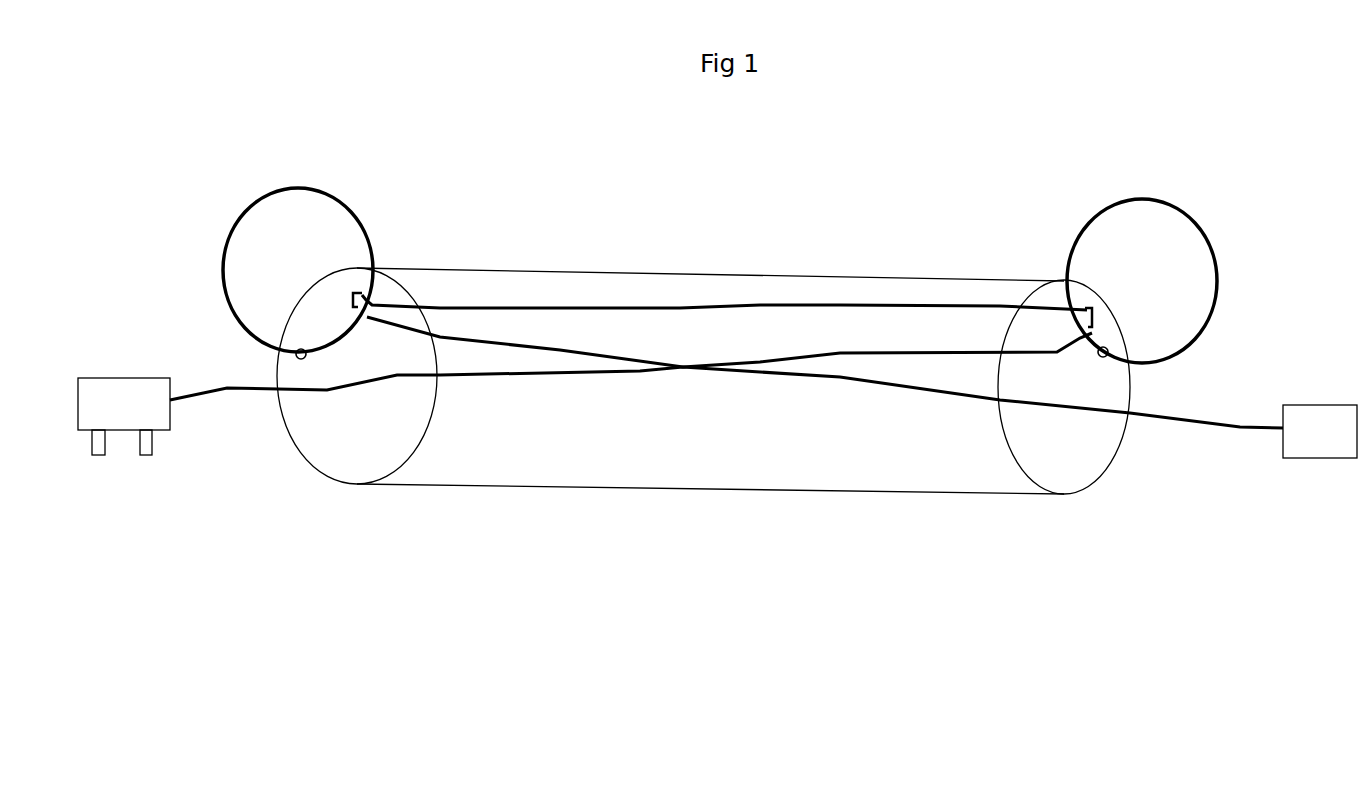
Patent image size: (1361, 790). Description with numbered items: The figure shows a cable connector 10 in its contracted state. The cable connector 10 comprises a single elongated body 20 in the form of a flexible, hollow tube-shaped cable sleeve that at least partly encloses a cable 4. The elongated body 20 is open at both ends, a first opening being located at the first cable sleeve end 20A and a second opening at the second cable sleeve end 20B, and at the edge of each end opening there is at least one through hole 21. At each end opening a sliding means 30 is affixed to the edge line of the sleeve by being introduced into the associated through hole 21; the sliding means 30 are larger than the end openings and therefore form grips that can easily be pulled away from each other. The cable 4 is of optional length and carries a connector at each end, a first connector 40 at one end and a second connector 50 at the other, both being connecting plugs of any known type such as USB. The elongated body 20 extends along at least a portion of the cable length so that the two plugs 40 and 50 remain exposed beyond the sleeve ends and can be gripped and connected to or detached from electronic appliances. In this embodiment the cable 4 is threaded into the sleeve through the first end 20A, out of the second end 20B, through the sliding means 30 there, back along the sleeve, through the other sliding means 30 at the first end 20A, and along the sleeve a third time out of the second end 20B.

The cable connector 10 is at (560, 208).
The elongated body 20 is at (712, 463).
The first end of cable sleeve 20A is at (410, 503).
The second end of cable sleeve 20B is at (1027, 515).
The sliding means 30 is at (333, 187).
The through hole 21 is at (285, 363).
The cable 4 is at (225, 395).
The first connector 40 is at (110, 417).
The second connector 50 is at (1313, 432).